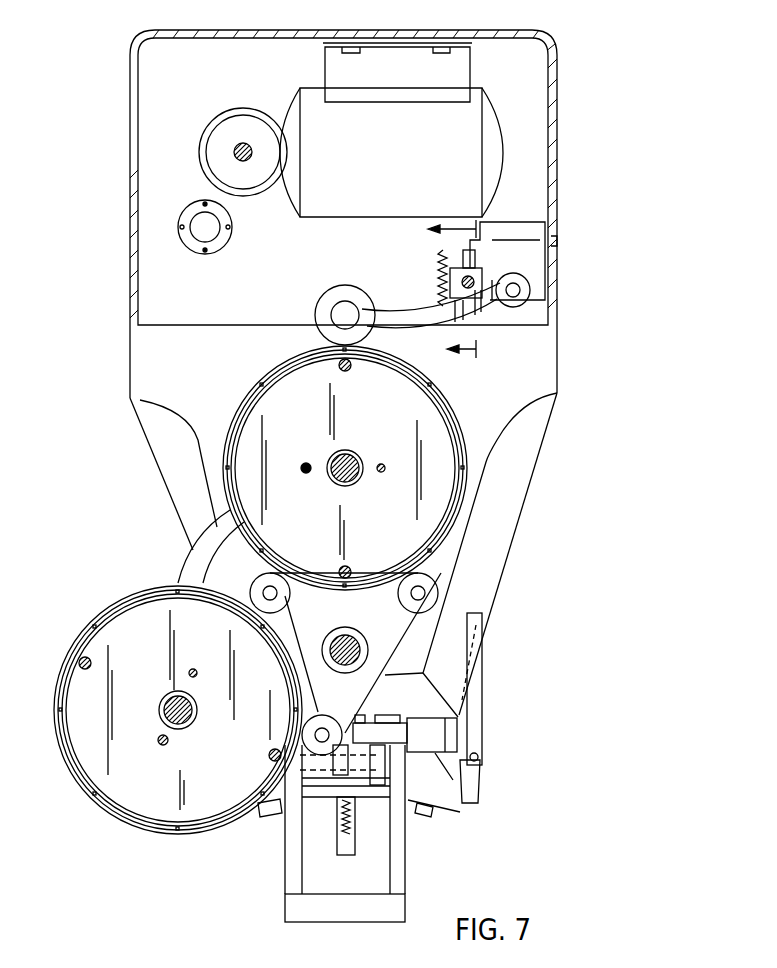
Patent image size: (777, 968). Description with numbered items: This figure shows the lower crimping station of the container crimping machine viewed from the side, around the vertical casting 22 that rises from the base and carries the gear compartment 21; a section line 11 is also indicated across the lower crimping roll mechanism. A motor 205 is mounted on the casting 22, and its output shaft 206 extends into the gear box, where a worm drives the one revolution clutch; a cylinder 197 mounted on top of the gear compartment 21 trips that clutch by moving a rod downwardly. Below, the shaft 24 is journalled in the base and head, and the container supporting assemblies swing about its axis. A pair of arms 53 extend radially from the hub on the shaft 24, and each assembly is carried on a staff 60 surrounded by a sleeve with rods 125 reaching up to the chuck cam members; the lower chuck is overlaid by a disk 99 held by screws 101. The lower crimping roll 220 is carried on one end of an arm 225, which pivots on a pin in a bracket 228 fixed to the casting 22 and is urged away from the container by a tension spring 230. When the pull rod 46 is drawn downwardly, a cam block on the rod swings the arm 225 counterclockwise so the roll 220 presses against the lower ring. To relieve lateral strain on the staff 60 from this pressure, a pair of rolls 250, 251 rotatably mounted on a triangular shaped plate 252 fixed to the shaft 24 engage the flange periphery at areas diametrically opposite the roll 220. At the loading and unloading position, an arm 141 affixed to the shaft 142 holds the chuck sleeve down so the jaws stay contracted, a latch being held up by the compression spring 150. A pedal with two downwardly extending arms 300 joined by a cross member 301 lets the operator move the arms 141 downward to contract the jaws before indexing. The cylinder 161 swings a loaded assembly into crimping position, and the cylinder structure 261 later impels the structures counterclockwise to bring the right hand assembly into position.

The gear compartment 21 is at (312, 249).
The motor 205 is at (365, 159).
The output shaft 206 is at (240, 150).
The cylinder 197 is at (212, 229).
The lower crimping roll 220 is at (349, 297).
The arm 225 is at (410, 320).
The tension spring 230 is at (440, 275).
The bracket 228 is at (526, 238).
The pull rod 46 is at (475, 281).
The casting 22 is at (557, 243).
The section line 11 is at (440, 289).
The disk 99 is at (377, 432).
The staff 60 is at (349, 479).
The screws 101 is at (348, 368).
The rods 125 is at (307, 463).
The roll 251 is at (280, 578).
The roll 250 is at (410, 578).
The arms 53 is at (200, 551).
The triangular shaped plate 252 is at (355, 624).
The shaft 24 is at (340, 644).
The arms 300 is at (393, 862).
The cross member 301 is at (336, 919).
The compression spring 150 is at (347, 822).
The shaft 142 is at (462, 742).
The arm 141 is at (482, 668).
The cylinder structure 261 is at (421, 815).
The cylinder 161 is at (275, 817).